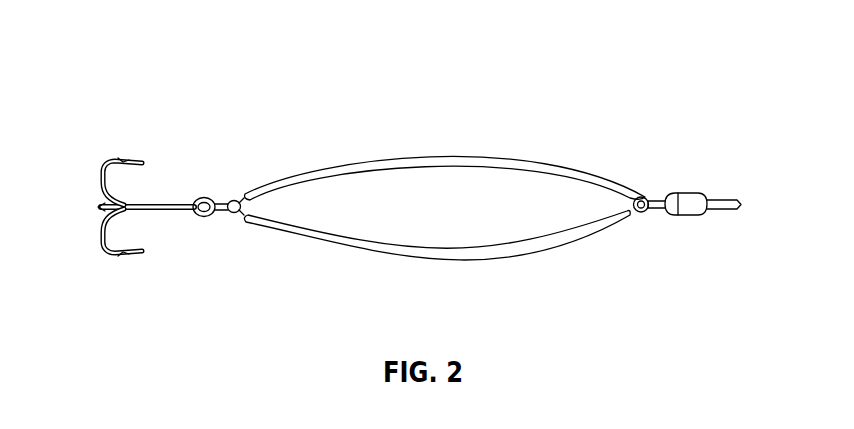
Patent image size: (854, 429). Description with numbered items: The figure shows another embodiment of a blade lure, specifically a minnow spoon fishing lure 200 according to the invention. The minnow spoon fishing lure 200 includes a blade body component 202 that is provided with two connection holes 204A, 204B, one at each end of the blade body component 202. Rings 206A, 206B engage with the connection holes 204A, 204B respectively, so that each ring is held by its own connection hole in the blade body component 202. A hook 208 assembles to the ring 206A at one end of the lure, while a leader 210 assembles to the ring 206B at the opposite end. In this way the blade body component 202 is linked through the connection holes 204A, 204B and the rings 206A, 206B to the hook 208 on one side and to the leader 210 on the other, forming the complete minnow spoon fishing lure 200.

The minnow spoon fishing lure 200 is at (281, 71).
The blade body component 202 is at (438, 185).
The connection hole 204A is at (234, 200).
The connection hole 204B is at (642, 196).
The ring 206A is at (223, 211).
The ring 206B is at (652, 212).
The hook 208 is at (120, 157).
The leader 210 is at (697, 205).